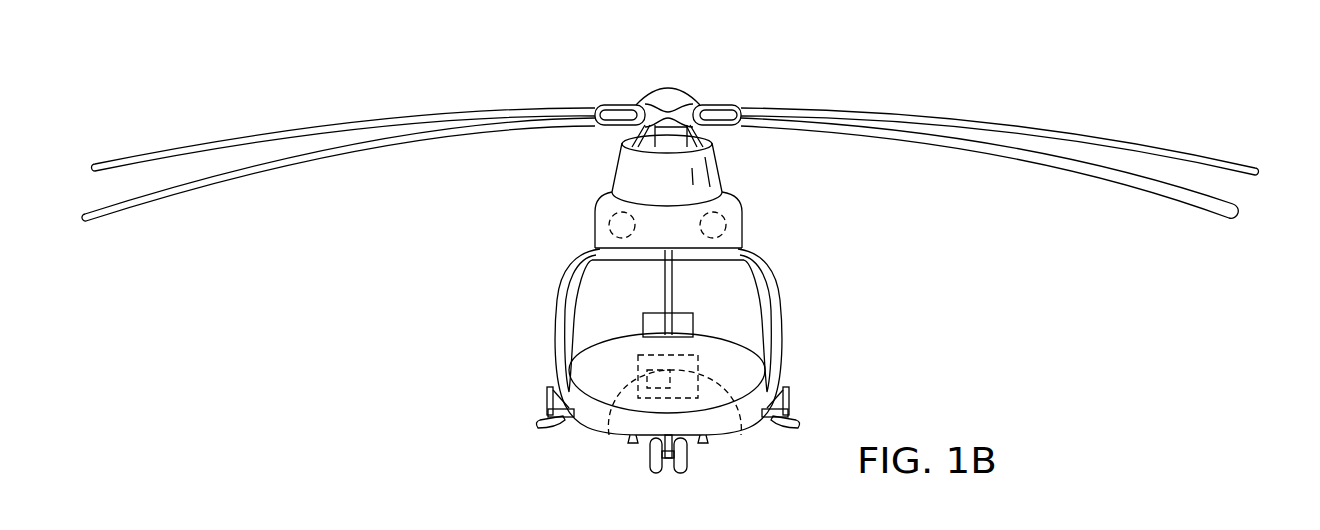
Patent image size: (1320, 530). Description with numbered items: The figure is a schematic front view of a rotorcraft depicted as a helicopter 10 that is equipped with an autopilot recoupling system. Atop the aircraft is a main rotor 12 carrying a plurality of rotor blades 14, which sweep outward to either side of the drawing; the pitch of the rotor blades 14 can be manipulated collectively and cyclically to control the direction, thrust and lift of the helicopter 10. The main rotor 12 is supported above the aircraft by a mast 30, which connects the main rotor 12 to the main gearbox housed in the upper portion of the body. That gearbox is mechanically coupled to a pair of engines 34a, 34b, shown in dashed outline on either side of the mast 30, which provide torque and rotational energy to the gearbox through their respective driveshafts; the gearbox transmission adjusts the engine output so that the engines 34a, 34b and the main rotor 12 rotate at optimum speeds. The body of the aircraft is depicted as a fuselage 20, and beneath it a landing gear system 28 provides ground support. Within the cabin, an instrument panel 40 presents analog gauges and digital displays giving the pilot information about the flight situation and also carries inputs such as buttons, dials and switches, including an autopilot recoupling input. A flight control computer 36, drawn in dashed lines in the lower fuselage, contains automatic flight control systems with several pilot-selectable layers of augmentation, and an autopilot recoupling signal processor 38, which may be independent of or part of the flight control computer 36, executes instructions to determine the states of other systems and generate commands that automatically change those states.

The helicopter 10 is at (514, 59).
The main rotor 12 is at (1045, 131).
The rotor blades 14 is at (1046, 168).
The fuselage 20 is at (590, 432).
The landing gear system 28 is at (688, 460).
The mast 30 is at (668, 143).
The engine 34a is at (727, 223).
The engine 34b is at (608, 223).
The flight control computer 36 is at (747, 440).
The autopilot recoupling signal processor 38 is at (609, 435).
The instrument panel 40 is at (694, 325).